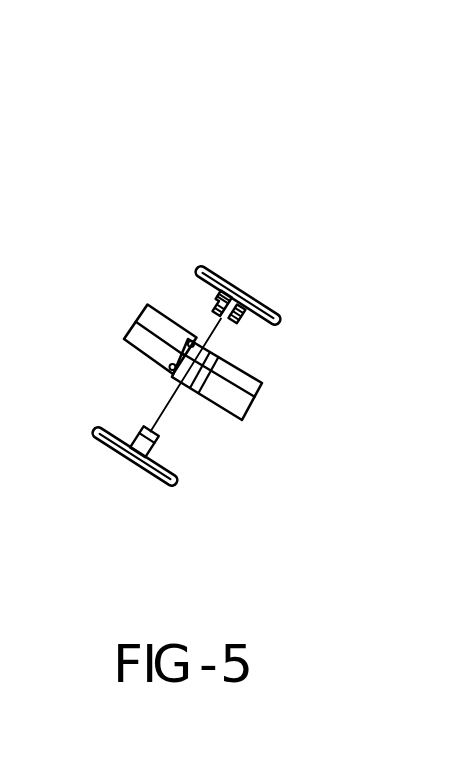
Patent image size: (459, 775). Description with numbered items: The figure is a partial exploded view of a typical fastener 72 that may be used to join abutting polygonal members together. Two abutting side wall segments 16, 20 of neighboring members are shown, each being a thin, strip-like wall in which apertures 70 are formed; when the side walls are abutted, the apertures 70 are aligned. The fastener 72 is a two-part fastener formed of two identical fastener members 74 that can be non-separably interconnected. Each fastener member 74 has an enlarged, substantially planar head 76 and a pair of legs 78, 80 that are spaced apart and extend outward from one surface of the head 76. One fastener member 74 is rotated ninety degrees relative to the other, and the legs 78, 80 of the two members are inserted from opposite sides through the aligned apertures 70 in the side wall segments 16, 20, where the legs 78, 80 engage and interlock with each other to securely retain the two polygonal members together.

The side wall segment 16 is at (244, 416).
The side wall segment 20 is at (258, 378).
The aperture 70 is at (192, 346).
The fastener 72 is at (223, 203).
The fastener member 74 is at (239, 290).
The head 76 is at (256, 290).
The leg 78 is at (210, 296).
The leg 80 is at (262, 327).